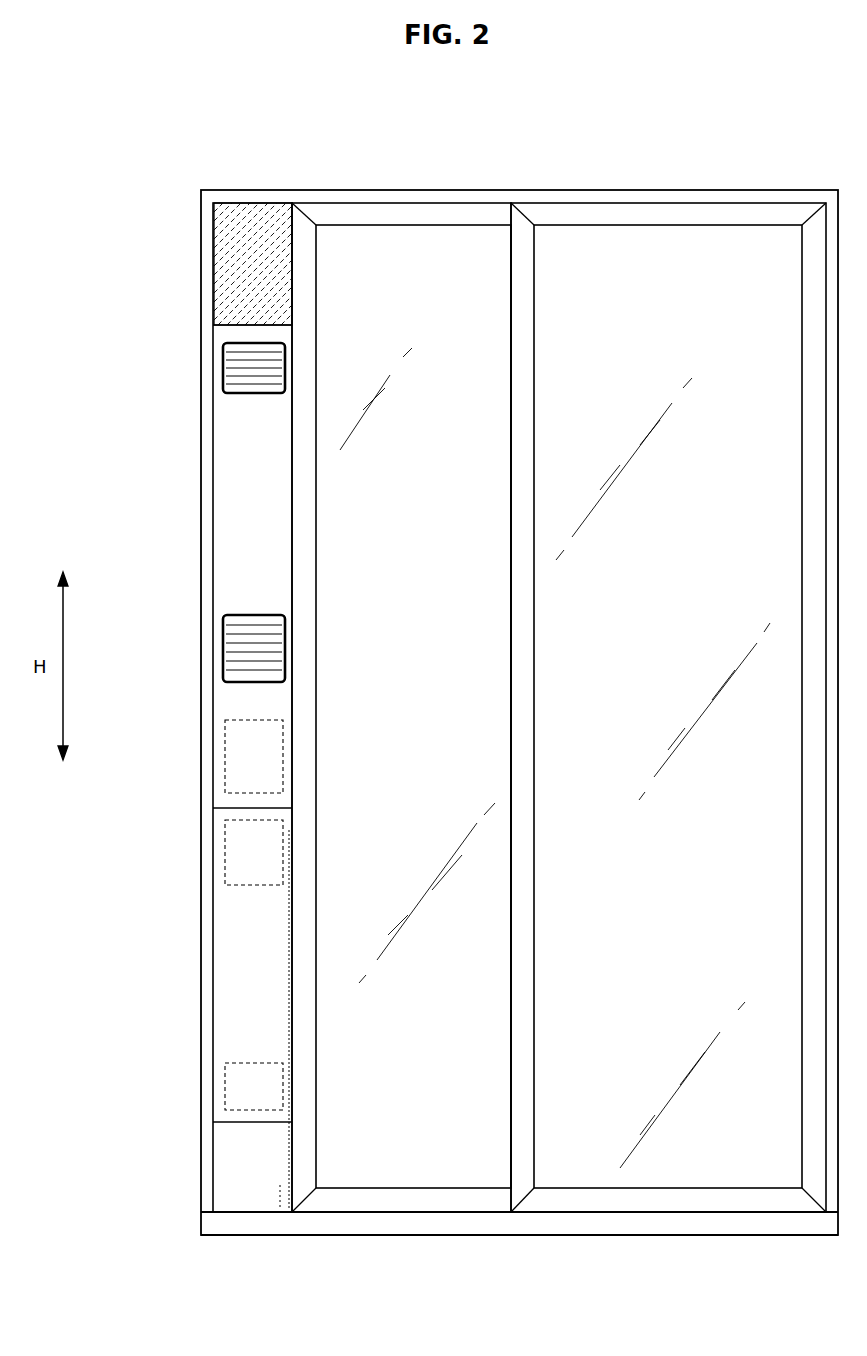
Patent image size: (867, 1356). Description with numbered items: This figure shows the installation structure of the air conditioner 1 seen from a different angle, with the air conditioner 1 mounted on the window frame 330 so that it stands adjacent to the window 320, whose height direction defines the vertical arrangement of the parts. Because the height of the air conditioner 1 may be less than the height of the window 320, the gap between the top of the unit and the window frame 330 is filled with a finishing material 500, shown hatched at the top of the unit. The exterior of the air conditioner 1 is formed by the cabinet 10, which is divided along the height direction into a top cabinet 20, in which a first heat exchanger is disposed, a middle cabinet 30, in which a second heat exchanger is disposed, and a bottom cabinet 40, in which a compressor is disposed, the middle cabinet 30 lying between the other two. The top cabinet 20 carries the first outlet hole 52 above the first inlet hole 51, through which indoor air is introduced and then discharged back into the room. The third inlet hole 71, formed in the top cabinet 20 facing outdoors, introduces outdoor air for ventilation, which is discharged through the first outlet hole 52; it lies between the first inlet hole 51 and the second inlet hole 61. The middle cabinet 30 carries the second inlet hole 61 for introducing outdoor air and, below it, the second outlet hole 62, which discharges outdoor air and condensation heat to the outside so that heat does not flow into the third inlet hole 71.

The air conditioner 1 is at (213, 462).
The cabinet 10 is at (252, 707).
The top cabinet 20 is at (232, 525).
The middle cabinet 30 is at (232, 965).
The bottom cabinet 40 is at (232, 1173).
The finishing material 500 is at (250, 230).
The first outlet hole 52 is at (252, 378).
The first inlet hole 51 is at (256, 650).
The third inlet hole 71 is at (258, 766).
The second inlet hole 61 is at (258, 868).
The second outlet hole 62 is at (258, 1100).
The window 320 is at (608, 1163).
The window frame 330 is at (297, 1226).